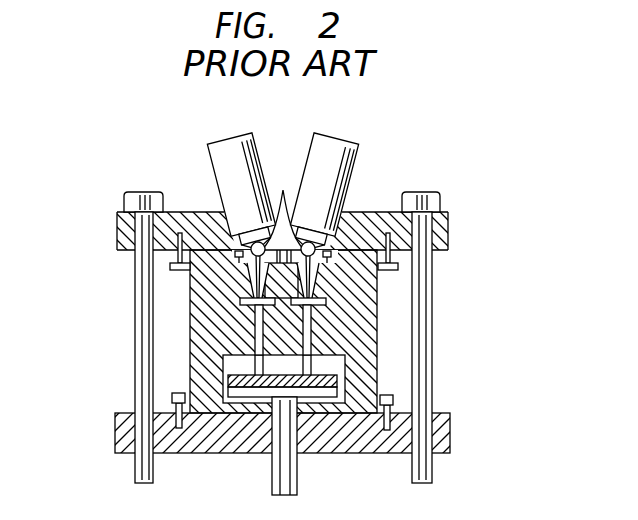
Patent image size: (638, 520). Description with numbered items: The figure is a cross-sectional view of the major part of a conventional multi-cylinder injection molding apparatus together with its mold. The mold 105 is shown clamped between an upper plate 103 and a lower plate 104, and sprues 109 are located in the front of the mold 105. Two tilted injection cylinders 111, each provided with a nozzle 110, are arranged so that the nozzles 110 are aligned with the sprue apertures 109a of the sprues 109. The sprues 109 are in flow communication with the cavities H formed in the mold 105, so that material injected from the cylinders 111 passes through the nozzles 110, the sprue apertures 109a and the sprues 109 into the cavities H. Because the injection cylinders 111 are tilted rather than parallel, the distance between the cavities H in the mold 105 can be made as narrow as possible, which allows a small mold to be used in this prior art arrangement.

The upper (fixed) platen 103 is at (448, 224).
The lower (movable) platen 104 is at (450, 434).
The mold 105 is at (373, 278).
The sprue 109 is at (252, 296).
The sprue aperture 109a is at (242, 222).
The nozzle 110 is at (283, 191).
The injection cylinder 111 is at (228, 138).
The cavity H is at (247, 307).